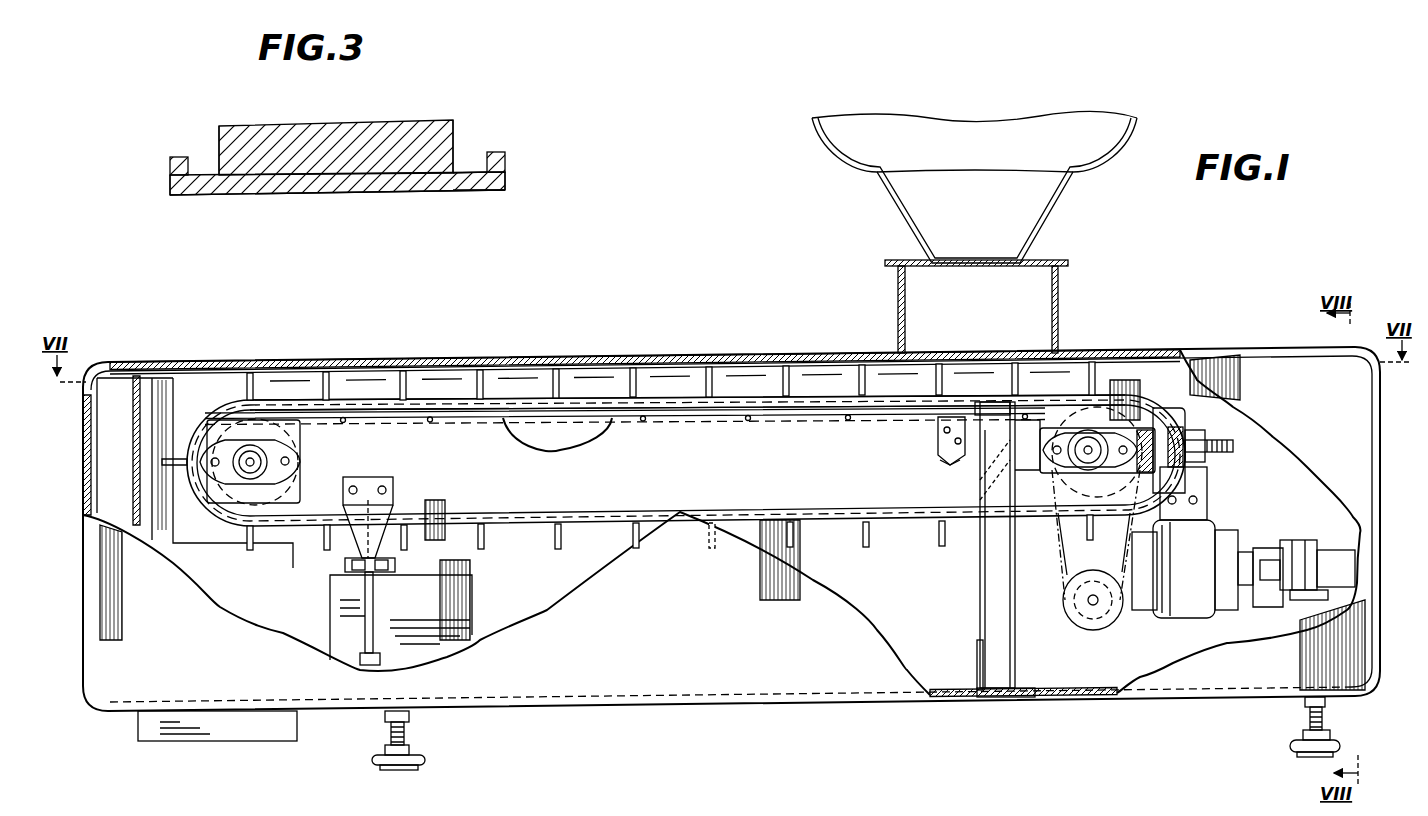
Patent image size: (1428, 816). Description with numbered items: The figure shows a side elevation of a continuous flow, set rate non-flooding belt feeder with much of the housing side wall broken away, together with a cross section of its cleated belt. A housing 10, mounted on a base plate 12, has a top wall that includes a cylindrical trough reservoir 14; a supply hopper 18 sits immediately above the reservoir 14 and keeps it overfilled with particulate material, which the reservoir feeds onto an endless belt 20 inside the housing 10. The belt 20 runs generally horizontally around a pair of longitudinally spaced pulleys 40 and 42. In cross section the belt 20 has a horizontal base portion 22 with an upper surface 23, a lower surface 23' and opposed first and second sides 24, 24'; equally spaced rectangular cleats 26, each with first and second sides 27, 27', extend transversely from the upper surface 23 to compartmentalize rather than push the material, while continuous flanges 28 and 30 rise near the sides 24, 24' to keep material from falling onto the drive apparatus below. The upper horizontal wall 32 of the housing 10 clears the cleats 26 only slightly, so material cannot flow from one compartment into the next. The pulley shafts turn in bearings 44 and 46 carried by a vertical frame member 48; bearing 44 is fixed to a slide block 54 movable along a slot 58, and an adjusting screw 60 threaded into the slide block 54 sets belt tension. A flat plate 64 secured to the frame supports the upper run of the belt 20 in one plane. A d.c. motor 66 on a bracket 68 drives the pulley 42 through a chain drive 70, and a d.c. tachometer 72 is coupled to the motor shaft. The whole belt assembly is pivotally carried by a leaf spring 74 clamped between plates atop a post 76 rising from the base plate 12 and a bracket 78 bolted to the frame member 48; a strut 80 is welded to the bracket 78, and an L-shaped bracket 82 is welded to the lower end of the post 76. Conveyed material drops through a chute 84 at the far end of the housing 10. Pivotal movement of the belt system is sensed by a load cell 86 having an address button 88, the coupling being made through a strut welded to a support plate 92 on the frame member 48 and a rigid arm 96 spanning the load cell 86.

In FIG. 1, the housing 10 is at (731, 506).
In FIG. 1, the base plate 12 is at (962, 700).
In FIG. 1, the cylindrical trough reservoir 14 is at (1058, 328).
In FIG. 1, the supply hopper 18 is at (1058, 203).
In FIG. 3, the endless belt 20 is at (503, 198).
In FIG. 1, the endless belt 20 is at (686, 455).
In FIG. 3, the horizontal base portion 22 is at (231, 186).
In FIG. 1, the horizontal base portion 22 is at (462, 400).
In FIG. 3, the upper surface 23 is at (491, 138).
In FIG. 3, the lower surface 23' is at (462, 207).
In FIG. 3, the first side 24 is at (143, 179).
In FIG. 3, the second side 24' is at (540, 172).
In FIG. 3, the cleats 26 is at (333, 130).
In FIG. 1, the cleats 26 is at (300, 385).
In FIG. 3, the first side 27 is at (194, 129).
In FIG. 3, the second side 27' is at (484, 125).
In FIG. 3, the continuous flange 28 is at (175, 157).
In FIG. 1, the continuous flange 28 is at (678, 395).
In FIG. 3, the continuous flange 30 is at (505, 153).
In FIG. 1, the upper horizontal wall 32 is at (598, 360).
In FIG. 1, the pulley 40 is at (228, 362).
In FIG. 1, the pulley 42 is at (1140, 395).
In FIG. 1, the bearing 44 is at (1088, 470).
In FIG. 1, the bearing 46 is at (262, 445).
In FIG. 1, the frame member 48 is at (536, 490).
In FIG. 1, the slide block 54 is at (1160, 425).
In FIG. 1, the slot 58 is at (1023, 452).
In FIG. 1, the adjusting screw 60 is at (1225, 445).
In FIG. 1, the flat plate 64 is at (587, 422).
In FIG. 1, the d.c. motor 66 is at (1222, 530).
In FIG. 1, the bracket 68 is at (1205, 470).
In FIG. 1, the chain drive 70 is at (1068, 550).
In FIG. 1, the d.c. tachometer 72 is at (1290, 545).
In FIG. 1, the leaf spring 74 is at (983, 402).
In FIG. 1, the post 76 is at (990, 545).
In FIG. 1, the bracket 78 is at (945, 438).
In FIG. 1, the strut 80 is at (945, 455).
In FIG. 1, the L-shaped bracket 82 is at (978, 650).
In FIG. 1, the chute 84 is at (133, 477).
In FIG. 1, the load cell 86 is at (462, 620).
In FIG. 1, the address button 88 is at (395, 563).
In FIG. 1, the support plate 92 is at (343, 492).
In FIG. 1, the rigid arm 96 is at (373, 590).